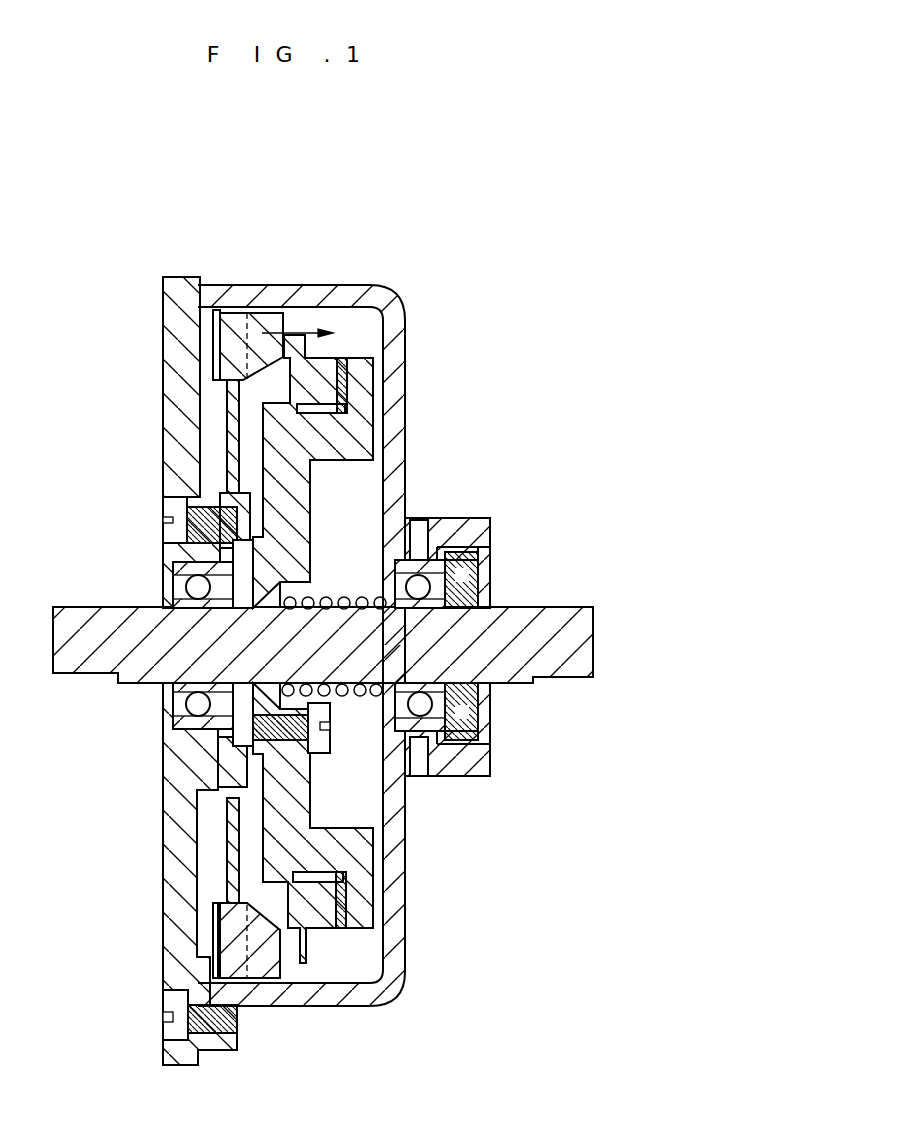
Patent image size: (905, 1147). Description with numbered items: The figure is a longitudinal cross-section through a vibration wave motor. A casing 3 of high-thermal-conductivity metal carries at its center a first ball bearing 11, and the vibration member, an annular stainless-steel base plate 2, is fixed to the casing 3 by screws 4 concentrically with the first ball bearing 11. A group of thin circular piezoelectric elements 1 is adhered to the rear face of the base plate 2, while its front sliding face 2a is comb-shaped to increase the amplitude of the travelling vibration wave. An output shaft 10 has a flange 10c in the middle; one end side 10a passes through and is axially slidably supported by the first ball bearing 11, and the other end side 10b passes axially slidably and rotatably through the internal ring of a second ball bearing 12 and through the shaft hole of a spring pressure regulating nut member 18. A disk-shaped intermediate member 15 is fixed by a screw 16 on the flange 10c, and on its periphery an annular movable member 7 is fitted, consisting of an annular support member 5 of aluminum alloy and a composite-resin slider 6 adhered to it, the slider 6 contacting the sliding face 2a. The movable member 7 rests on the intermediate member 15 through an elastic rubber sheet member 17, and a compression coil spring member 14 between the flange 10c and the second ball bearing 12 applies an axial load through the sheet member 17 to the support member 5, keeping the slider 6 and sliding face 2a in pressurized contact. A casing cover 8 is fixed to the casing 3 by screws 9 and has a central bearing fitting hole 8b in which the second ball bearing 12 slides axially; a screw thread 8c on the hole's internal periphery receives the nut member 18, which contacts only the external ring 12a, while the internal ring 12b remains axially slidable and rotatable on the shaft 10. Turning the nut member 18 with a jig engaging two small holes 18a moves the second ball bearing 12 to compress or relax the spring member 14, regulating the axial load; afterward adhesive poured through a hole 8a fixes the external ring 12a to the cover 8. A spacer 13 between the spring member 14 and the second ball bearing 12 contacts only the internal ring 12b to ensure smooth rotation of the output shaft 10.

The piezoelectric elements 1 is at (227, 297).
The annular base plate 2 is at (243, 297).
The sliding face 2a is at (287, 313).
The casing 3 is at (178, 323).
The screws 4 is at (175, 515).
The annular support member 5 is at (372, 320).
The slider 6 is at (348, 340).
The annular movable member 7 is at (320, 573).
The casing cover 8 is at (356, 998).
The hole 8a is at (420, 558).
The bearing fitting hole 8b is at (455, 578).
The screw thread 8c is at (470, 547).
The screws 9 is at (170, 1043).
The output shaft 10 is at (150, 625).
The end side of the output shaft 10a is at (78, 655).
The other end side of the output shaft 10b is at (566, 665).
The flange 10c is at (268, 557).
The first ball bearing 11 is at (190, 705).
The second ball bearing 12 is at (420, 780).
The external ring 12a is at (440, 772).
The internal ring 12b is at (430, 612).
The spacer 13 is at (418, 532).
The compression coil spring member 14 is at (325, 598).
The intermediate member 15 is at (352, 905).
The screw 16 is at (320, 740).
The elastic rubber sheet member 17 is at (345, 384).
The spring pressure regulating nut member 18 is at (478, 556).
The small holes 18a is at (478, 722).